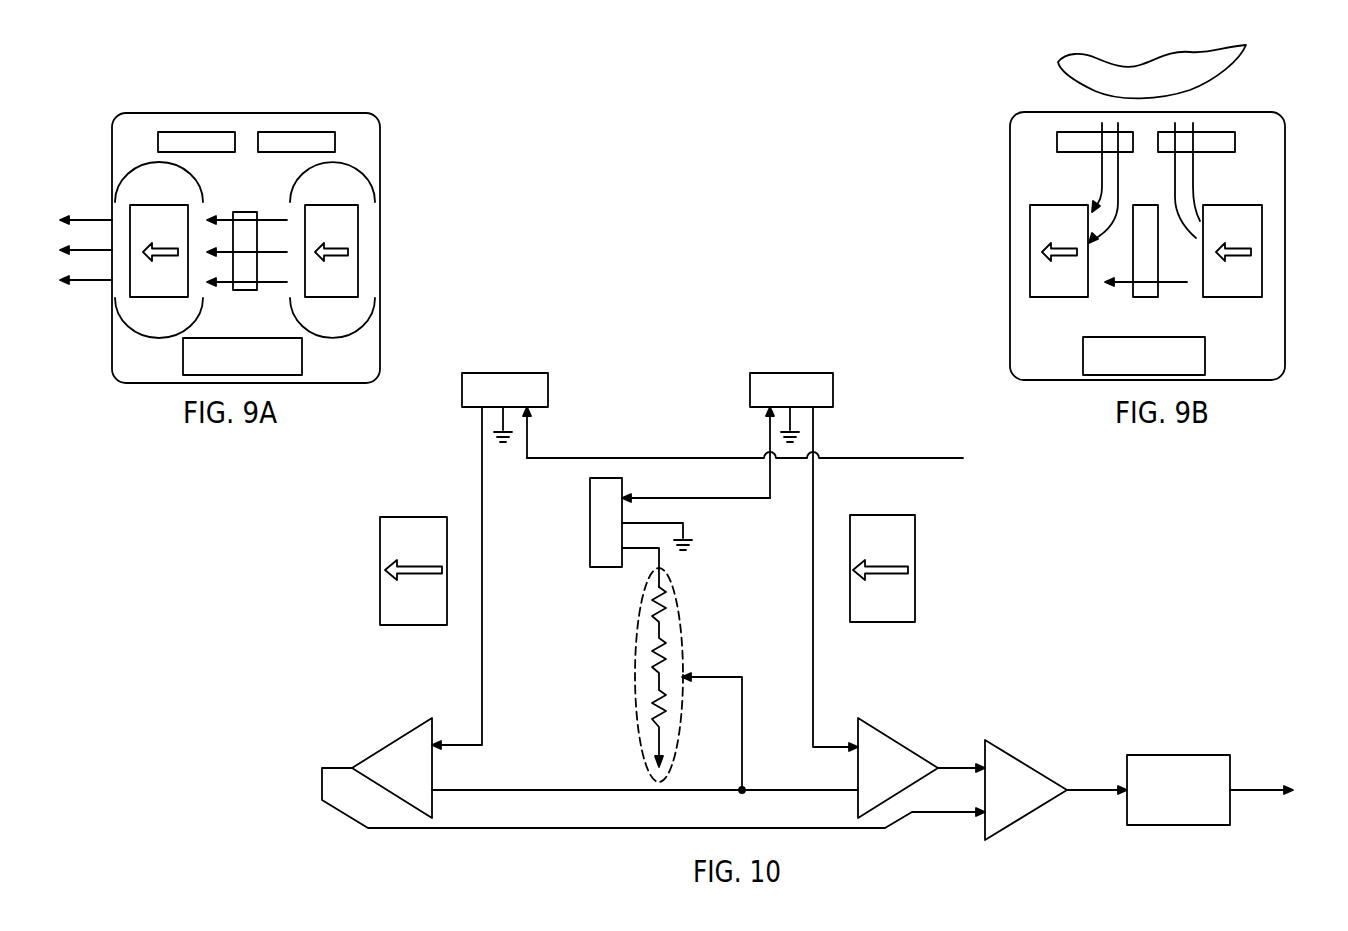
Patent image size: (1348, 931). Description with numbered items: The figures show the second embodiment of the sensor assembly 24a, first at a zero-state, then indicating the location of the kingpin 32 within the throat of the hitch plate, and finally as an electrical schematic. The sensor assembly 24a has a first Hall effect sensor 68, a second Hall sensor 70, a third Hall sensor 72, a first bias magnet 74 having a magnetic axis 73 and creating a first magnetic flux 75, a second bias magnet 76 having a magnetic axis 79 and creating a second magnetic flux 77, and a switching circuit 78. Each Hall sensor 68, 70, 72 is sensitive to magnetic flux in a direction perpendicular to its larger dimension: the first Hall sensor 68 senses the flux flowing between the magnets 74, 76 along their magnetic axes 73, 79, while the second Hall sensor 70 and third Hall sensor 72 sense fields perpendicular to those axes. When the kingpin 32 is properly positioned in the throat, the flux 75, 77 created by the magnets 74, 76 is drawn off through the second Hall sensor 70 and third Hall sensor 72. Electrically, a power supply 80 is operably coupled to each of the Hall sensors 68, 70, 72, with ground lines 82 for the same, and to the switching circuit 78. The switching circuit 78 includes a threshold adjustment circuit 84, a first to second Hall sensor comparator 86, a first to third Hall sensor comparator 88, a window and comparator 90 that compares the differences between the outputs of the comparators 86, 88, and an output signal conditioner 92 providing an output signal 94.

In FIG. 9A, the sensor assembly 24a is at (374, 103).
In FIG. 9B, the sensor assembly 24a is at (1277, 103).
In FIG. 9B, the kingpin 32 is at (1250, 52).
In FIG. 9A, the first Hall effect sensor 68 is at (253, 212).
In FIG. 9B, the first Hall effect sensor 68 is at (1158, 220).
In FIG. 10, the first Hall effect sensor 68 is at (590, 535).
In FIG. 9A, the second Hall sensor 70 is at (310, 132).
In FIG. 9B, the second Hall sensor 70 is at (1205, 132).
In FIG. 10, the second Hall sensor 70 is at (835, 380).
In FIG. 9A, the third Hall sensor 72 is at (188, 132).
In FIG. 9B, the third Hall sensor 72 is at (1087, 132).
In FIG. 10, the third Hall sensor 72 is at (550, 380).
In FIG. 9A, the magnetic axis 73 is at (342, 256).
In FIG. 9B, the magnetic axis 73 is at (1247, 256).
In FIG. 10, the magnetic axis 73 is at (882, 574).
In FIG. 9A, the first bias magnet 74 is at (325, 207).
In FIG. 9B, the first bias magnet 74 is at (1230, 207).
In FIG. 10, the first bias magnet 74 is at (892, 515).
In FIG. 9A, the first magnetic flux 75 is at (267, 220).
In FIG. 9B, the first magnetic flux 75 is at (1193, 163).
In FIG. 9A, the second bias magnet 76 is at (155, 207).
In FIG. 9B, the second bias magnet 76 is at (1057, 205).
In FIG. 10, the second bias magnet 76 is at (432, 517).
In FIG. 9A, the second magnetic flux 77 is at (90, 220).
In FIG. 9B, the second magnetic flux 77 is at (1118, 163).
In FIG. 9A, the switching circuit 78 is at (243, 338).
In FIG. 9B, the switching circuit 78 is at (1152, 337).
In FIG. 10, the switching circuit 78 is at (978, 659).
In FIG. 9A, the magnetic axis 79 is at (170, 256).
In FIG. 9B, the magnetic axis 79 is at (1072, 256).
In FIG. 10, the magnetic axis 79 is at (410, 574).
In FIG. 10, the power supply 80 is at (903, 457).
In FIG. 10, the ground lines 82 is at (503, 418).
In FIG. 10, the threshold adjustment circuit 84 is at (675, 595).
In FIG. 10, the first to second Hall sensor comparator 86 is at (880, 730).
In FIG. 10, the first to third Hall sensor comparator 88 is at (392, 738).
In FIG. 10, the window and comparator 90 is at (1008, 753).
In FIG. 10, the output signal conditioner 92 is at (1187, 755).
In FIG. 10, the output signal 94 is at (1248, 787).